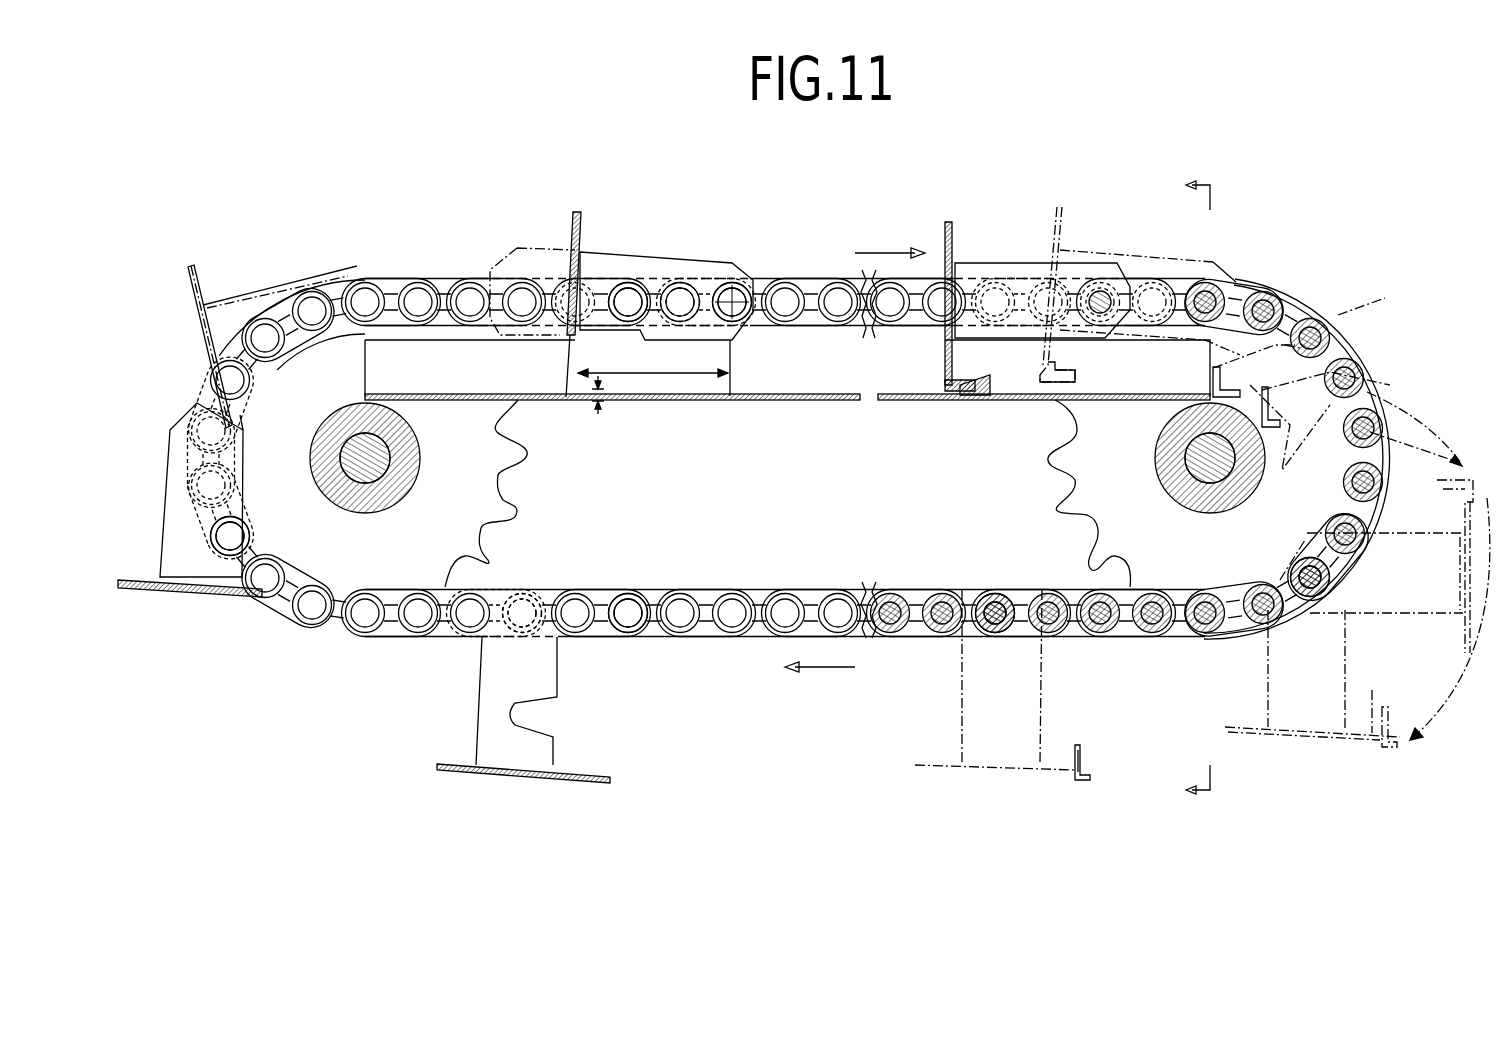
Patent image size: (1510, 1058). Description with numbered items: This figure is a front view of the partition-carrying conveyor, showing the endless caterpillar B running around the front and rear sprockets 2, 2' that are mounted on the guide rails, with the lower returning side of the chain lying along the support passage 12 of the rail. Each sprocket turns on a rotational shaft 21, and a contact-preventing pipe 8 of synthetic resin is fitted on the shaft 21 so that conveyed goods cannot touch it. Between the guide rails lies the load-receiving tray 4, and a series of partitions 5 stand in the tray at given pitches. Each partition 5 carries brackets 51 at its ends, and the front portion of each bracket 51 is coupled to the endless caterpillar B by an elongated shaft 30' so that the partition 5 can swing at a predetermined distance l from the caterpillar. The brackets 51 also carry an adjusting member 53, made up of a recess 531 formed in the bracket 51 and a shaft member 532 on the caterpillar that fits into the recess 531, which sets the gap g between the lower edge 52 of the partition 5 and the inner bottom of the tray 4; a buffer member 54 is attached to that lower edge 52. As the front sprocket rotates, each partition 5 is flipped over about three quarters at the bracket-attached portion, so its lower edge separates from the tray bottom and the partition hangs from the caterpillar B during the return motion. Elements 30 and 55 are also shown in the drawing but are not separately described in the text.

The sprocket 2 is at (846, 495).
The sprocket 2' is at (787, 493).
The load-receiving tray 4 is at (976, 396).
The partition 5 is at (580, 350).
The contact-preventing pipe 8 is at (358, 410).
The support passage 12 is at (1184, 490).
The rotational shaft 21 is at (365, 470).
The link plate assembly 30 is at (224, 490).
The elongated shaft 30' is at (984, 422).
The bracket 51 is at (690, 264).
The lower edge 52 is at (568, 398).
The adjusting member 53 is at (700, 195).
The recess 531 is at (630, 290).
The shaft member 532 is at (662, 285).
The buffer member 54 is at (1055, 380).
The guide 55 is at (522, 265).
The endless caterpillar B is at (808, 280).
The gap g is at (600, 405).
The predetermined distance l is at (654, 368).